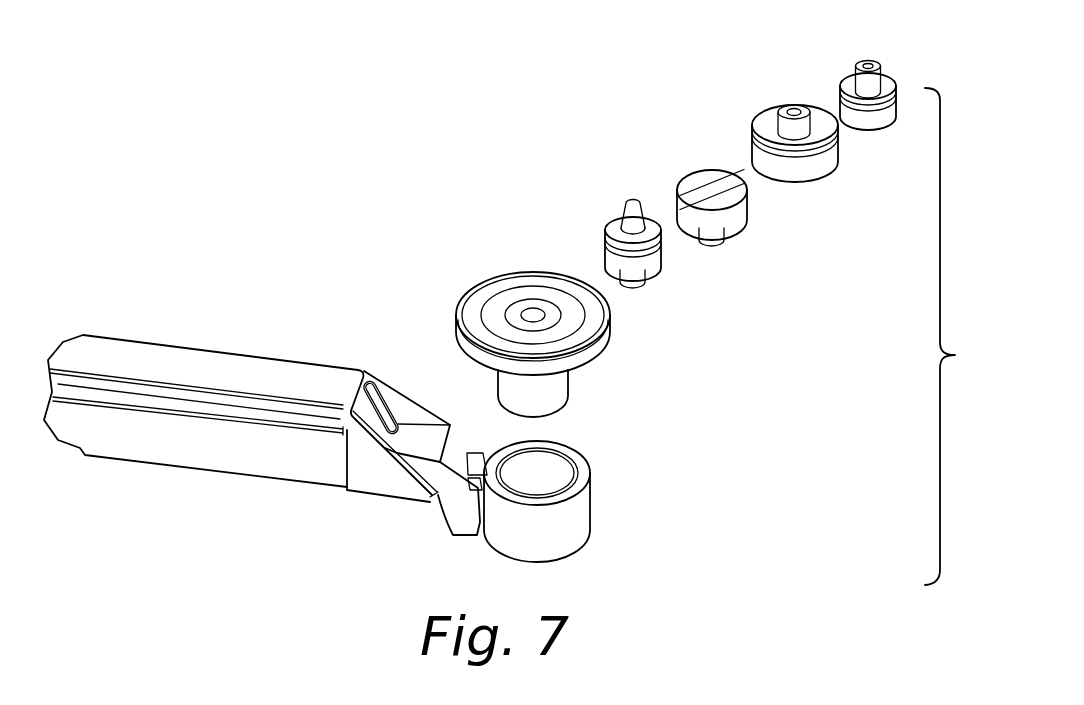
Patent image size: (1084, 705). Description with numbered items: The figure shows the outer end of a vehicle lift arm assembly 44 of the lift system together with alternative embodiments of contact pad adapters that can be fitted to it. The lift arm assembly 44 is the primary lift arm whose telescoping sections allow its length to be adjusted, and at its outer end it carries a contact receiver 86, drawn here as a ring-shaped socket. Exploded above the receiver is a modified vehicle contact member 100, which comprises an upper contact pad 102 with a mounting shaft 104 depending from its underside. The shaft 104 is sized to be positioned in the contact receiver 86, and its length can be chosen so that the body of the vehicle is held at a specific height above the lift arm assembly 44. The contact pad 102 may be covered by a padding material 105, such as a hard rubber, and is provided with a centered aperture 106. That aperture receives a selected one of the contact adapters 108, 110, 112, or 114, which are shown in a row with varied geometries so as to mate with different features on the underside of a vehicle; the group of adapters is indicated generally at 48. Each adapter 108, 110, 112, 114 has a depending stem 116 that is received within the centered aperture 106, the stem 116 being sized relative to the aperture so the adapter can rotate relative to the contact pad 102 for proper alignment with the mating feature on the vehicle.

The vehicle lift arm assembly 44 is at (176, 470).
The accessory assembly 48 is at (818, 31).
The contact receiver 86 is at (582, 519).
The vehicle contact member 100 is at (526, 325).
The upper contact pad 102 is at (610, 352).
The mounting shaft 104 is at (567, 395).
The padding material 105 is at (495, 277).
The centered aperture 106 is at (531, 308).
The contact adapter 108 is at (593, 238).
The contact adapter 110 is at (693, 168).
The contact adapter 112 is at (752, 126).
The contact adapter 114 is at (880, 130).
The depending stem 116 is at (640, 285).